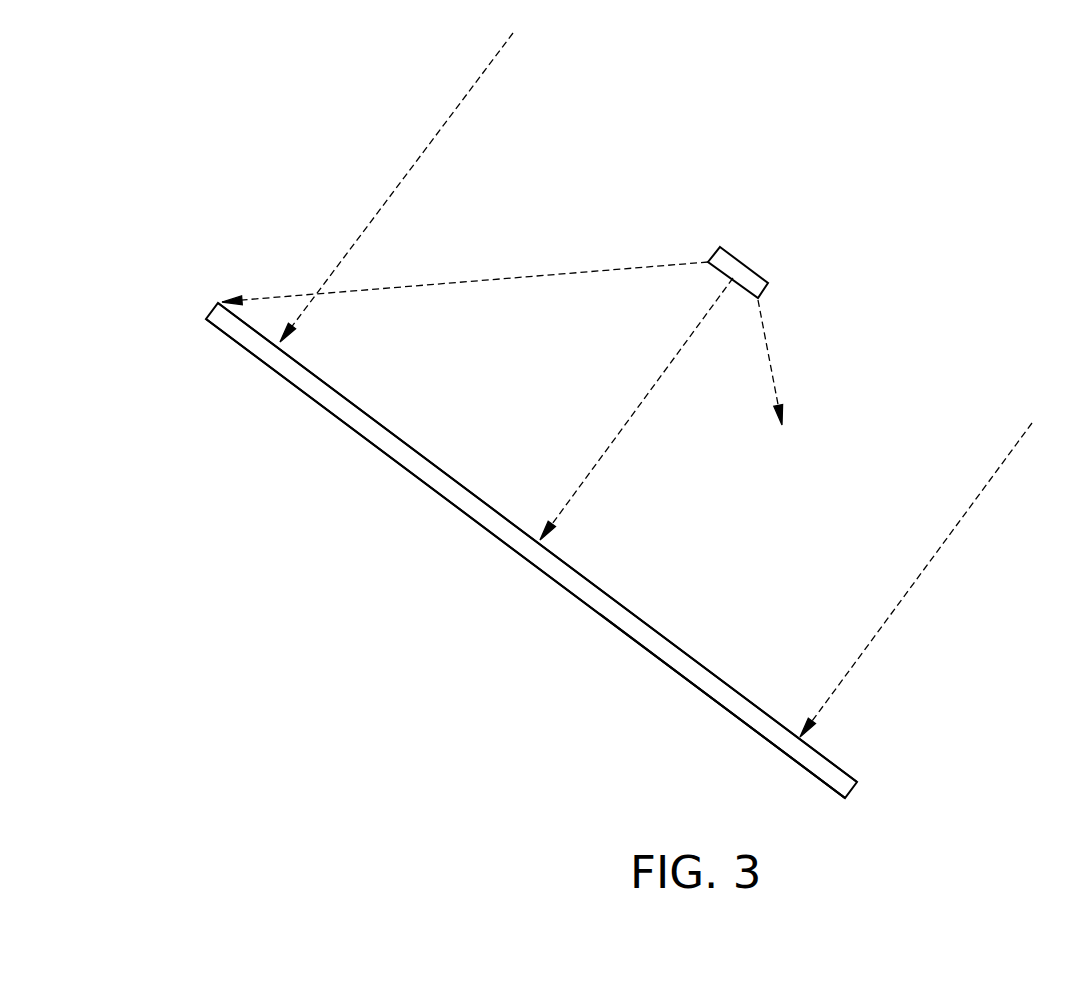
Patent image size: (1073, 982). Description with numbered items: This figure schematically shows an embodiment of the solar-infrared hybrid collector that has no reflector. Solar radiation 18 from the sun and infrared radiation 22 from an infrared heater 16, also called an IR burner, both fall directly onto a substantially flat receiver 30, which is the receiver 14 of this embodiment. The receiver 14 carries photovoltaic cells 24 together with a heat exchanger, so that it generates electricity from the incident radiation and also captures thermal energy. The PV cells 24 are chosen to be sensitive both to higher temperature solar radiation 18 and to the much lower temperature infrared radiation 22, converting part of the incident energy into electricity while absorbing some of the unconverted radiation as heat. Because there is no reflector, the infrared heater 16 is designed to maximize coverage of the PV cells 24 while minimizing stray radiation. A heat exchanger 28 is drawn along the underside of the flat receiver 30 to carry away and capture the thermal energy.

The receiver 14 is at (812, 773).
The infrared heater 16 is at (740, 272).
The solar radiation 18 is at (413, 161).
The infrared radiation 22 is at (505, 278).
The photovoltaic cells 24 is at (367, 438).
The reflector heat exchanger 28 is at (692, 685).
The substantially flat receiver 30 is at (600, 617).